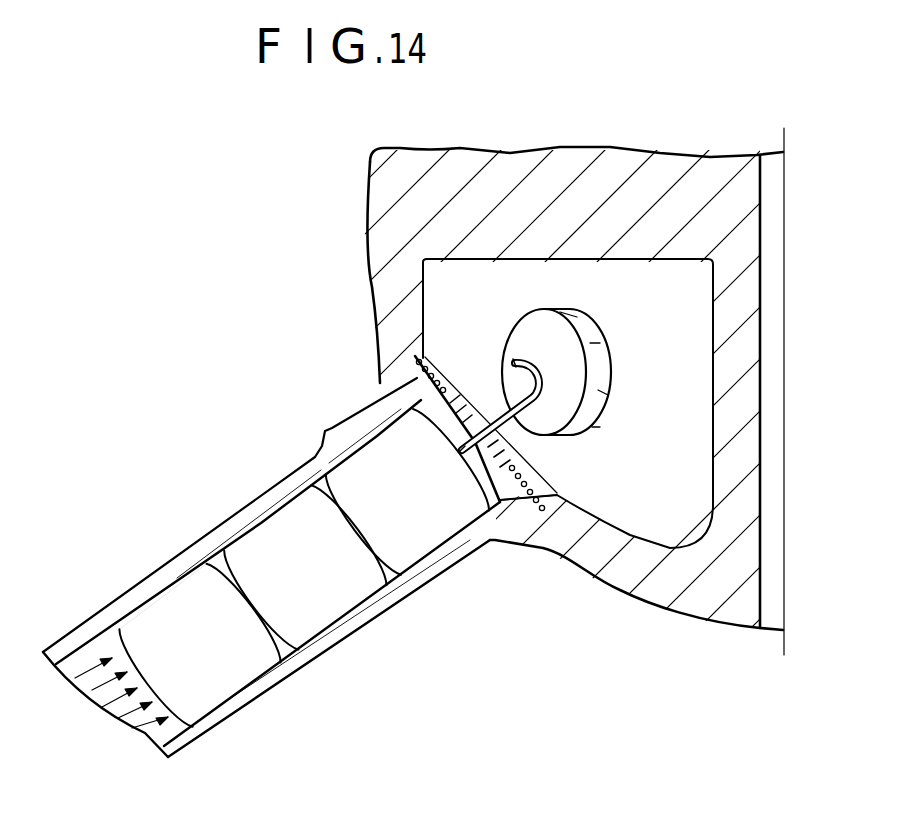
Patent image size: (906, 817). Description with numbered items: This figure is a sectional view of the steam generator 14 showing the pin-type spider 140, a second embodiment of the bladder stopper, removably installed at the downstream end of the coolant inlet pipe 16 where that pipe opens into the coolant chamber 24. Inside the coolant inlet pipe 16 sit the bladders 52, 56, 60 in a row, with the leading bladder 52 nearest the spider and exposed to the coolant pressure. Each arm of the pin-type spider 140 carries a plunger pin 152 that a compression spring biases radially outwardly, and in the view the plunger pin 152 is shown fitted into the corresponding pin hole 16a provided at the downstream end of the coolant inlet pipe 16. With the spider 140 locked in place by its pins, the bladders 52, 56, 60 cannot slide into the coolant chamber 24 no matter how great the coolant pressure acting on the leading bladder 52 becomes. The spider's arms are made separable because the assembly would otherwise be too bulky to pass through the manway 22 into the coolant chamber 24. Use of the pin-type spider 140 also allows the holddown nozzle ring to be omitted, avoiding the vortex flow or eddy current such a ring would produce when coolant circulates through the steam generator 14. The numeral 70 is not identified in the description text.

The steam generator 14 is at (385, 193).
The pin-type spider 140 is at (455, 405).
The pin hole 16a is at (413, 360).
The plunger pin 152 is at (392, 390).
The manway 22 is at (593, 343).
The pin 70 is at (547, 395).
The coolant chamber 24 is at (688, 441).
The coolant inlet pipe 16 is at (263, 507).
The bladder 60 is at (412, 546).
The bladder 56 is at (320, 617).
The leading bladder 52 is at (230, 683).